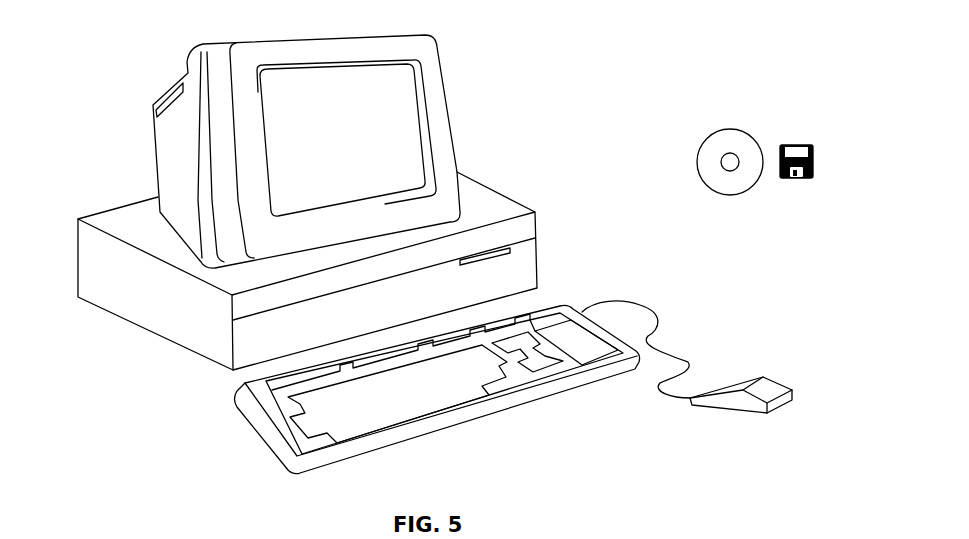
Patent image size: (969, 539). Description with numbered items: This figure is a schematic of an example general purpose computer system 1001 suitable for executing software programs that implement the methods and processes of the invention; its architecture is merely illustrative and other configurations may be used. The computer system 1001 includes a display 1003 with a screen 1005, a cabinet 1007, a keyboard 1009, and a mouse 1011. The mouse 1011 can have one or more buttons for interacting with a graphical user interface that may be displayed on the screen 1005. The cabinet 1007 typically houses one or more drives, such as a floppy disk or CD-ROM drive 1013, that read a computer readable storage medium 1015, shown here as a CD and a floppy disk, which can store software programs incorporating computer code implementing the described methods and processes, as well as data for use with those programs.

The computer system 1001 is at (643, 63).
The display 1003 is at (453, 148).
The screen 1005 is at (417, 90).
The cabinet 1007 is at (200, 353).
The keyboard 1009 is at (440, 430).
The mouse 1011 is at (780, 381).
The floppy disk or CD-ROM drive 1013 is at (512, 243).
The computer readable storage medium 1015 is at (775, 116).